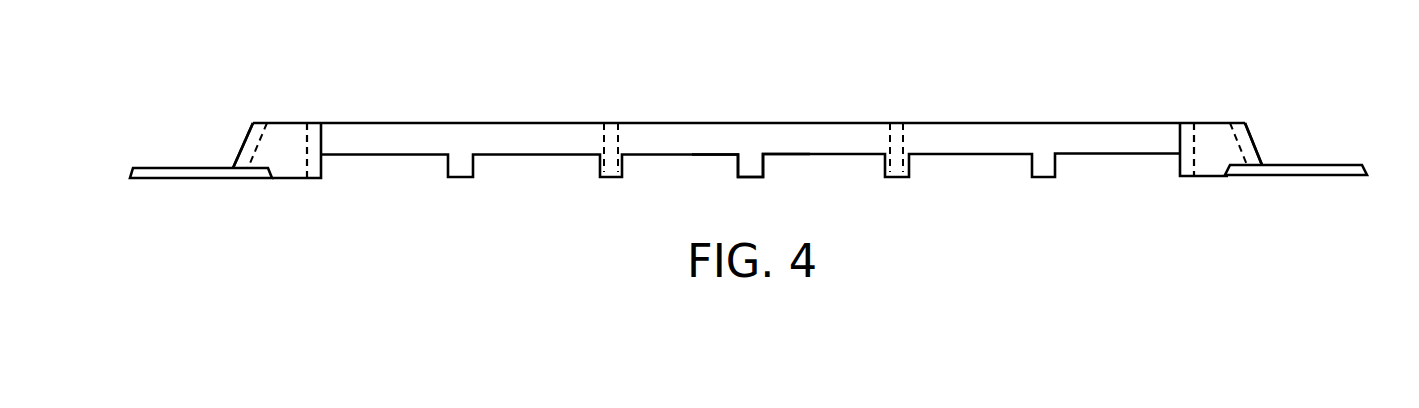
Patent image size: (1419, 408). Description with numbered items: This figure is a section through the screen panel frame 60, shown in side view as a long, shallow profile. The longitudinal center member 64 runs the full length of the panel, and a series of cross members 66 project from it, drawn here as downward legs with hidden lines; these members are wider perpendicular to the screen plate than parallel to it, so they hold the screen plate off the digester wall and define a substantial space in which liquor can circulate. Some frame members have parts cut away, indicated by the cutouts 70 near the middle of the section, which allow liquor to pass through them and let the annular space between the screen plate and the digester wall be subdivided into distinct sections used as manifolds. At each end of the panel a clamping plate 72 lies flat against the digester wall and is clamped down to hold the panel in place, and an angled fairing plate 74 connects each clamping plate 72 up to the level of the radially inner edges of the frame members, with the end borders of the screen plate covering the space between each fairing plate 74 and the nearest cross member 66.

The frame 60 is at (1110, 172).
The longitudinal center member 64 is at (987, 137).
The cross members 66 is at (318, 138).
The cutouts 70 is at (692, 156).
The clamping plate 72 is at (182, 173).
The angled fairing plate 74 is at (248, 147).